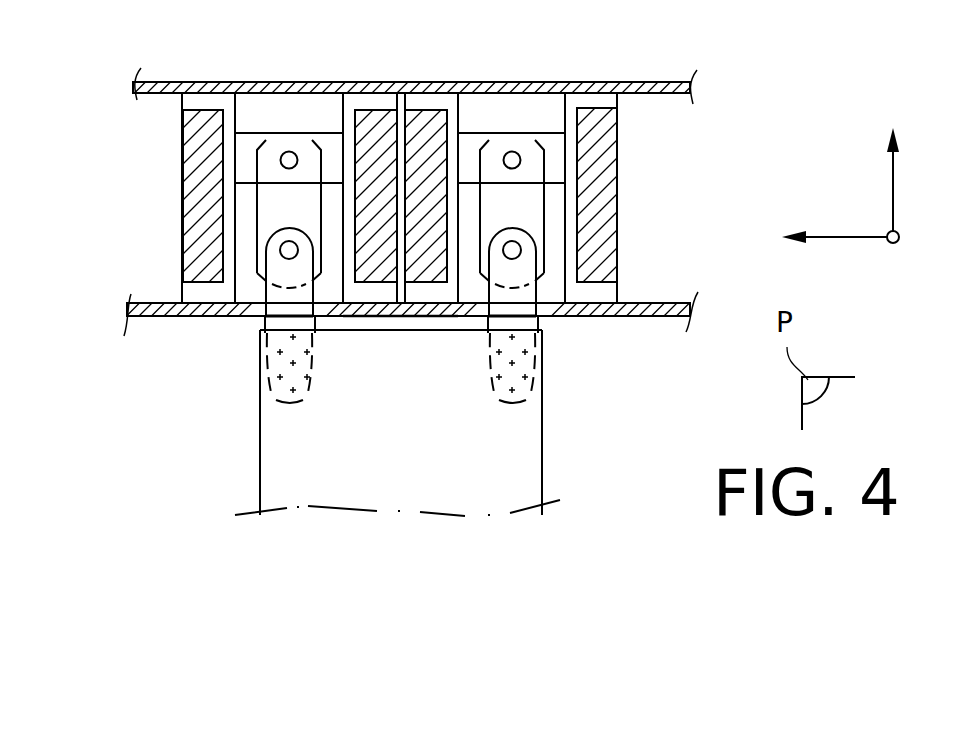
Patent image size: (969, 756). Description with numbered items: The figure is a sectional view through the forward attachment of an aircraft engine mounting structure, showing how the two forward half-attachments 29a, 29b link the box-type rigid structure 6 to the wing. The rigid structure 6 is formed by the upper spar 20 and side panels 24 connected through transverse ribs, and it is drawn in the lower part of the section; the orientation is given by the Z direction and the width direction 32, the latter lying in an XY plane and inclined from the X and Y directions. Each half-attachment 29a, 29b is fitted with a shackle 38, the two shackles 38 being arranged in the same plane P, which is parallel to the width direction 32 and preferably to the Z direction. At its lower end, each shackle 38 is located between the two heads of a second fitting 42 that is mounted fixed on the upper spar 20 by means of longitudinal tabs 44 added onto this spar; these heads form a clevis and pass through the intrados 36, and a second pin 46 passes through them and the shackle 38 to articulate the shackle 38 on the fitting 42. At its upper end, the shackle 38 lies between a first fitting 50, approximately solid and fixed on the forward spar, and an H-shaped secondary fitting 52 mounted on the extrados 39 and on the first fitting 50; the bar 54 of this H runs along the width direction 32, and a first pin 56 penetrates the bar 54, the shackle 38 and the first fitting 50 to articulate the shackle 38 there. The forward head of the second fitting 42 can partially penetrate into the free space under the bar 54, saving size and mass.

The rigid structure 6 is at (520, 464).
The upper spar 20 is at (405, 318).
The side panel 24 is at (257, 458).
The forward half-attachment 29a is at (150, 118).
The forward half-attachment 29b is at (640, 105).
The width direction 32 is at (847, 238).
The intrados 36 is at (172, 318).
The shackle 38 is at (275, 203).
The extrados 39 is at (407, 82).
The second fitting 42 is at (255, 289).
The longitudinal tab 44 is at (292, 323).
The second pin 46 is at (280, 250).
The first fitting 50 is at (278, 102).
The secondary fitting 52 is at (226, 149).
The bar of the H 54 is at (250, 130).
The first pin 56 is at (292, 152).